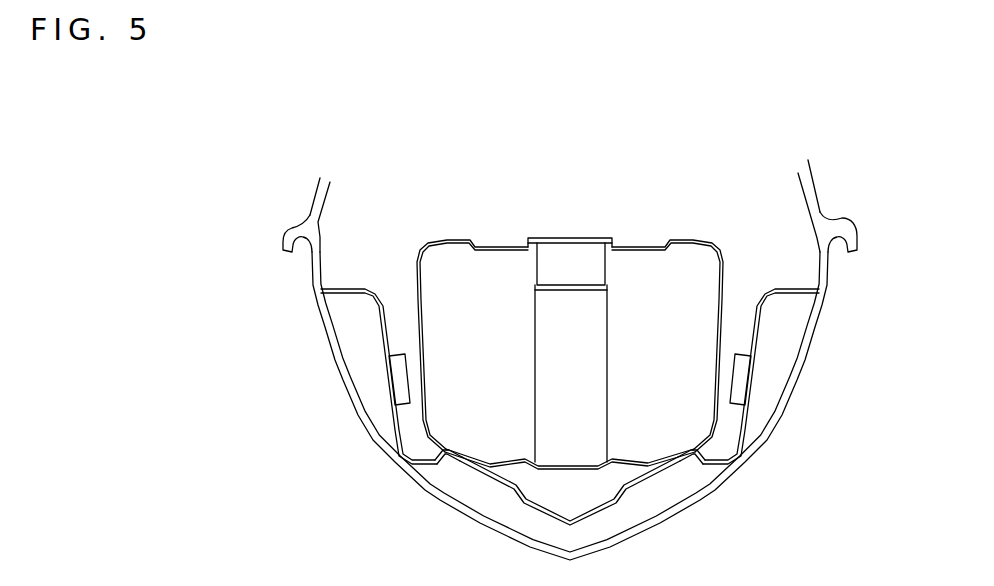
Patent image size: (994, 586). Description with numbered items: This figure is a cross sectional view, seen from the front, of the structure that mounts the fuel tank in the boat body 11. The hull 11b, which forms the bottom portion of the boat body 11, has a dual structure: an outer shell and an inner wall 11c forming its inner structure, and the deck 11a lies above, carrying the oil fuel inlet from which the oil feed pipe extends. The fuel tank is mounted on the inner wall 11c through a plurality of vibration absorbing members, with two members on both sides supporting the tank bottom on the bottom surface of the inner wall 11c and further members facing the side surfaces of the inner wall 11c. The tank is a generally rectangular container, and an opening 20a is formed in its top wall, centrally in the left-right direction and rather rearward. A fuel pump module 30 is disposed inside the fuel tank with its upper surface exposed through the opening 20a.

The boat body 11 is at (616, 360).
The deck 11a is at (818, 193).
The hull 11b is at (593, 386).
The inner wall 11c is at (542, 506).
The opening 20a is at (597, 252).
The fuel pump module 30 is at (570, 353).